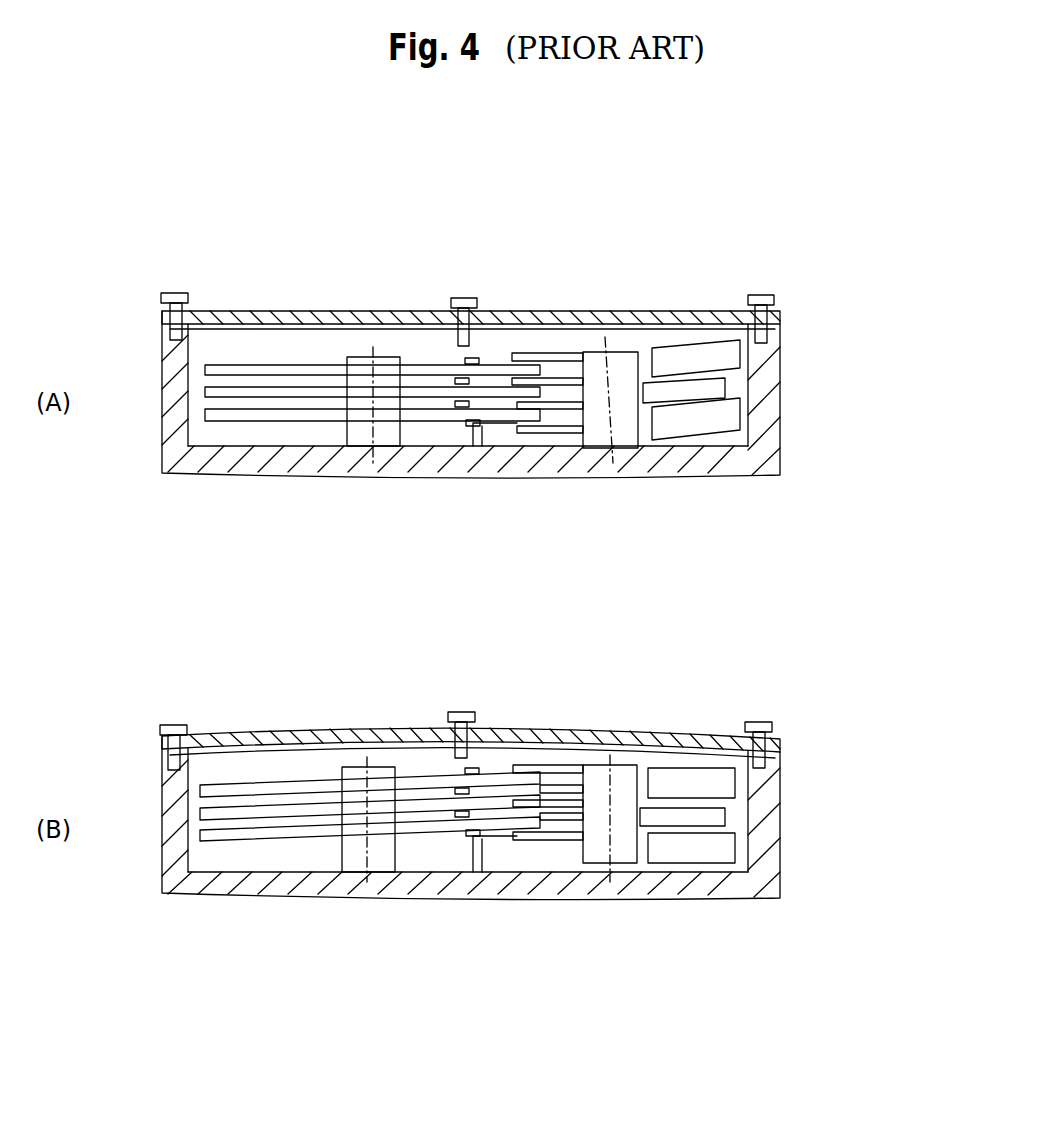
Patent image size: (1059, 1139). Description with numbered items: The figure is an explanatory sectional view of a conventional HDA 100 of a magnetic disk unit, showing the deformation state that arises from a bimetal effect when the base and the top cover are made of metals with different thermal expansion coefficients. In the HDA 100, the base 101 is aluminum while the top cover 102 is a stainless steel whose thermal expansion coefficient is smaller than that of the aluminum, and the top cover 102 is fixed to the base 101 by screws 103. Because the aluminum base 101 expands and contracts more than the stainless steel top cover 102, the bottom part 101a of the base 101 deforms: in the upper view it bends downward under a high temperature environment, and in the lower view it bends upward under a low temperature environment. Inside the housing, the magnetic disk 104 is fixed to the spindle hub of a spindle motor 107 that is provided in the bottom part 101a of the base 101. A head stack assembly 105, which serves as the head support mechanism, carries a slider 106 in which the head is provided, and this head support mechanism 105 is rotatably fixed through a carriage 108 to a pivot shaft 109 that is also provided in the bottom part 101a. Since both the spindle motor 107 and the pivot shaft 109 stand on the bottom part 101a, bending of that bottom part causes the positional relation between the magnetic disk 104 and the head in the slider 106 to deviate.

The HDA 100 is at (518, 222).
The base 101 is at (781, 402).
The bottom part 101a is at (529, 478).
The top cover 102 is at (285, 310).
The screws 103 is at (176, 293).
The magnetic disk 104 is at (229, 364).
The head stack assembly 105 is at (554, 339).
The slider 106 is at (467, 383).
The spindle motor 107 is at (352, 466).
The carriage 108 is at (587, 350).
The pivot shaft 109 is at (606, 346).